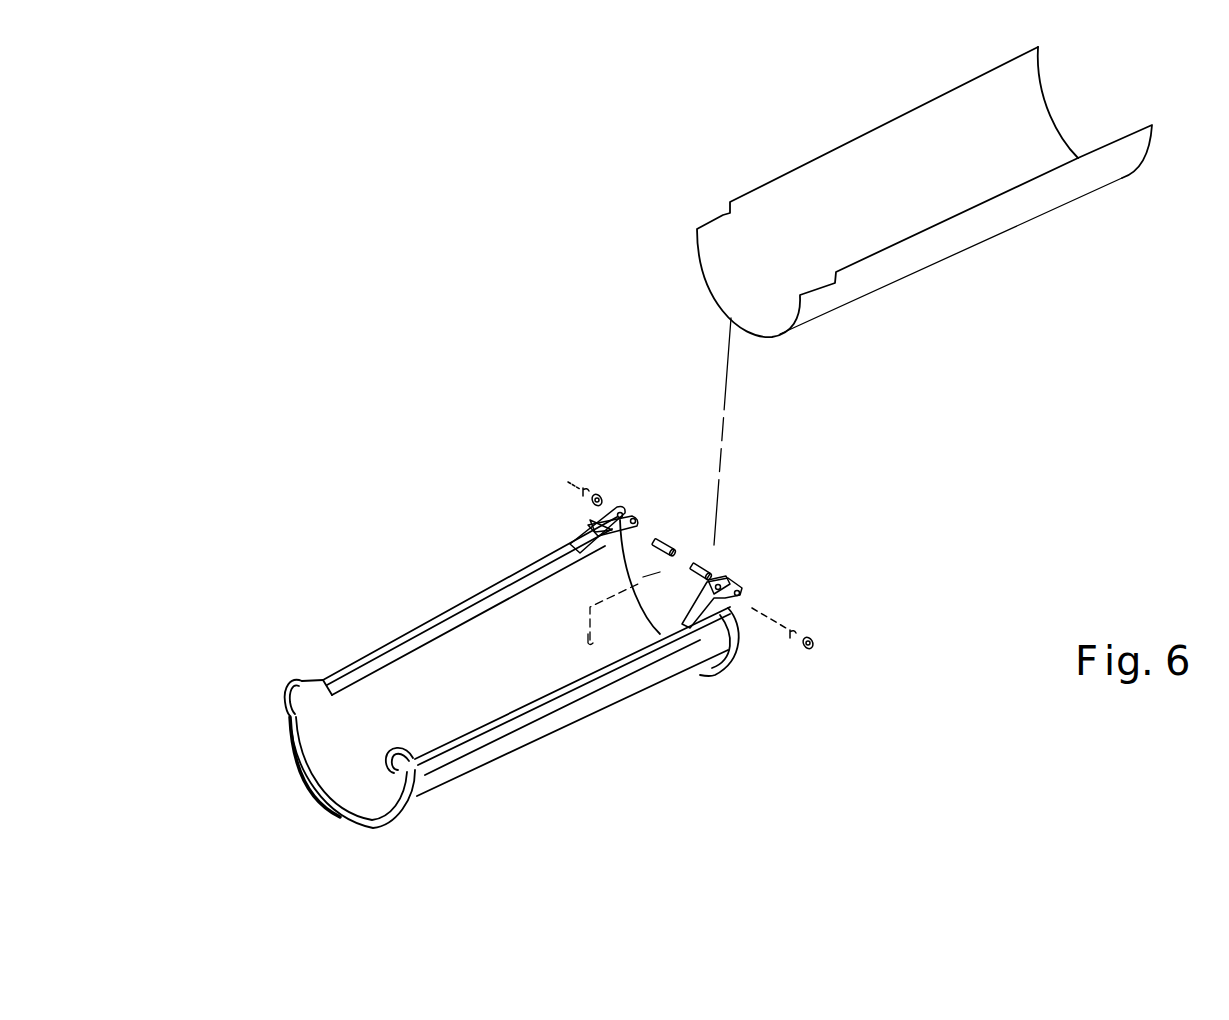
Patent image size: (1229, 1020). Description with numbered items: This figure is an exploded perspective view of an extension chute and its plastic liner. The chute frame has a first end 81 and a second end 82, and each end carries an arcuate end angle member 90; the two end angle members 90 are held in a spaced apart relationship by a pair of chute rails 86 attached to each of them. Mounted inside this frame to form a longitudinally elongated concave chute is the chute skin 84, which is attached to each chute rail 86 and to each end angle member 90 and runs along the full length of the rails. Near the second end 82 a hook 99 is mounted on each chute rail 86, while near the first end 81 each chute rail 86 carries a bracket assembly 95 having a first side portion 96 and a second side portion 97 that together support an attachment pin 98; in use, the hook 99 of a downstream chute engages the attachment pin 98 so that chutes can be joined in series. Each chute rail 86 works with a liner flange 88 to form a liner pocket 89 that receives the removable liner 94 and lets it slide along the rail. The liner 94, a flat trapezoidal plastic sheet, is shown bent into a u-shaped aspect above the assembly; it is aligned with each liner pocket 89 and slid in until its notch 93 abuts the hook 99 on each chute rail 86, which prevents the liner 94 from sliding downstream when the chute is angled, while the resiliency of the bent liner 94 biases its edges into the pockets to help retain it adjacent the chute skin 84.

The first end 81 is at (745, 526).
The second end 82 is at (258, 828).
The chute skin 84 is at (370, 722).
The chute rail 86 is at (388, 646).
The liner flange 88 is at (417, 645).
The liner pocket 89 is at (323, 684).
The arcuate end angle member 90 is at (400, 817).
The notch 93 is at (724, 212).
The removable liner 94 is at (1018, 208).
The bracket assembly 95 is at (623, 502).
The first side portion 96 is at (598, 514).
The second side portion 97 is at (606, 538).
The attachment pin 98 is at (665, 545).
The hook 99 is at (287, 687).